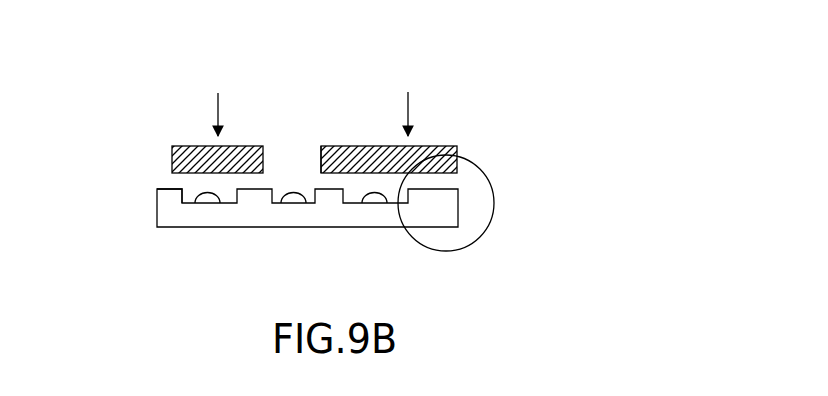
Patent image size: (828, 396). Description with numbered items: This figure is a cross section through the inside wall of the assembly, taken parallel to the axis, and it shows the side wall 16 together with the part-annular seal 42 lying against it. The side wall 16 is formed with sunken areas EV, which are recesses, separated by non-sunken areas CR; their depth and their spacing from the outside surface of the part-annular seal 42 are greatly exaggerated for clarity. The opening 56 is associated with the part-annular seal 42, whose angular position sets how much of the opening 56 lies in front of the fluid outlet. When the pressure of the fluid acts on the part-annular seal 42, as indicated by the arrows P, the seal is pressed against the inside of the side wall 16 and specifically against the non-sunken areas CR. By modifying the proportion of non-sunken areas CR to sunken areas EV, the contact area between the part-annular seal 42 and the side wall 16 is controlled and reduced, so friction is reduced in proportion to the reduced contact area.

The side wall 16 is at (464, 210).
The part-annular seal 42 is at (446, 140).
The opening 56 is at (320, 158).
The non-sunken area CR is at (165, 189).
The sunken area EV is at (219, 199).
The pressure of the fluid P is at (314, 98).